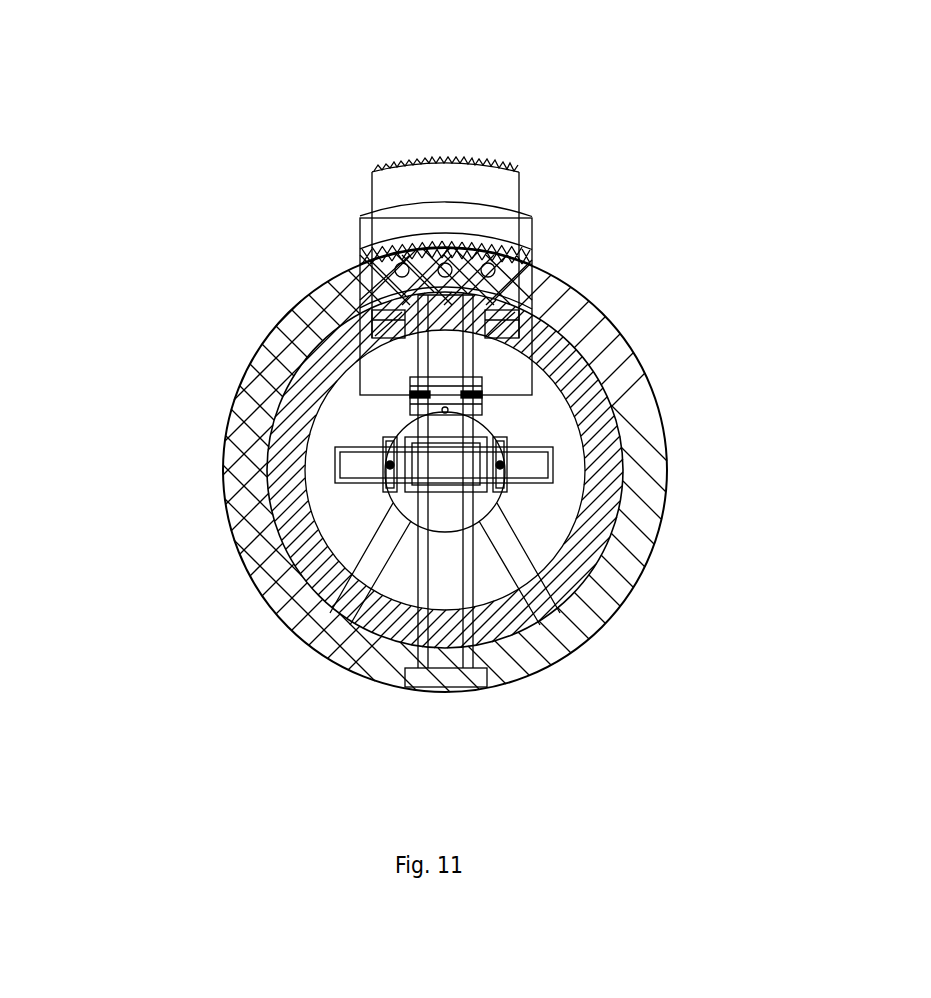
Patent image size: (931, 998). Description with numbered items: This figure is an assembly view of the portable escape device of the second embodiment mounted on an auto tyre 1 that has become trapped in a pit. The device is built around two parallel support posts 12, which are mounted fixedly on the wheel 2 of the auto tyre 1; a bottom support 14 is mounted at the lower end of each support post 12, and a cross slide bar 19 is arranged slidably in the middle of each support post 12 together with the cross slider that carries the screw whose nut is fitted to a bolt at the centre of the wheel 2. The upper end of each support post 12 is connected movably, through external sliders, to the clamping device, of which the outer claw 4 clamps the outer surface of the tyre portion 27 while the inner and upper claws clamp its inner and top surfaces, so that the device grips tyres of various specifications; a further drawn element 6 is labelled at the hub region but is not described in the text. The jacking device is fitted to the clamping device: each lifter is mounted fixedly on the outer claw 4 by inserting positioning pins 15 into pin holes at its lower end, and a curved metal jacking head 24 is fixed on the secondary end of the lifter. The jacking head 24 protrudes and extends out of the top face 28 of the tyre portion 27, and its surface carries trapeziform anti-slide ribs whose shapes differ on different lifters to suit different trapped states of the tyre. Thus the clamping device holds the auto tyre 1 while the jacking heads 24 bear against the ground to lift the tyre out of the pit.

The auto tyre 1 is at (237, 537).
The wheel 2 is at (384, 440).
The outer claw 4 is at (380, 352).
The hub 6 is at (402, 498).
The support post 12 is at (417, 590).
The bottom support 14 is at (455, 690).
The positioning pin 15 is at (518, 250).
The cross slide bar 19 is at (525, 488).
The jacking head 24 is at (453, 150).
The tyre portion 27 is at (642, 487).
The top face 28 is at (650, 398).